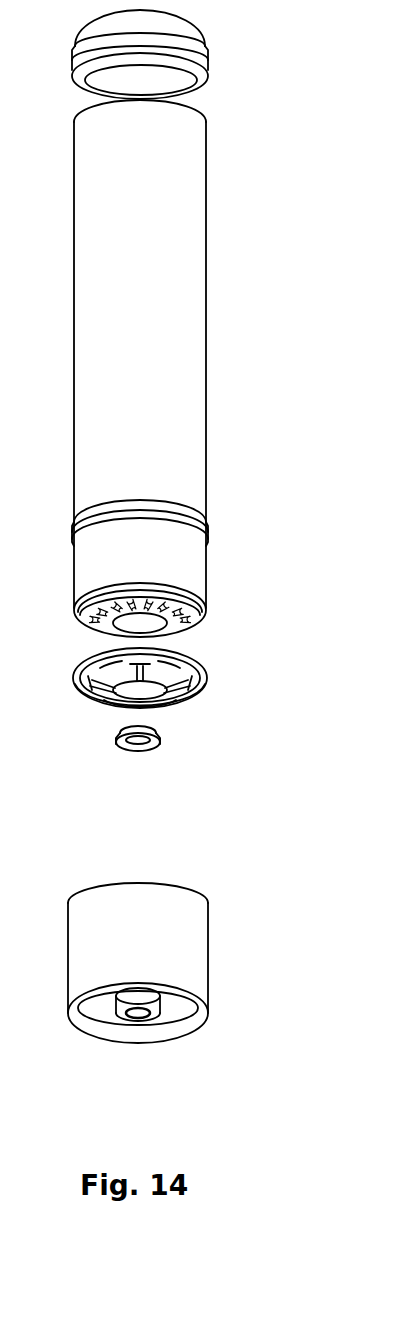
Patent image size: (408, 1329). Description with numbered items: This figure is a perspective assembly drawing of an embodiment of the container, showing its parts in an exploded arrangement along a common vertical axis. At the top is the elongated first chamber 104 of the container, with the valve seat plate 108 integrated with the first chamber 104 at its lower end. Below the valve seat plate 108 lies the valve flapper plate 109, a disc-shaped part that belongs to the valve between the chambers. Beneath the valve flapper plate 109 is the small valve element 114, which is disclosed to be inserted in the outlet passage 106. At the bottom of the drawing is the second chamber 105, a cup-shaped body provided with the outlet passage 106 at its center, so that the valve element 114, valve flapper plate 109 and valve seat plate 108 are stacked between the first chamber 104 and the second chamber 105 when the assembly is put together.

The first chamber 104 is at (145, 545).
The second chamber 105 is at (209, 922).
The outlet passage 106 is at (160, 1007).
The valve seat plate 108 is at (187, 618).
The valve flapper plate 109 is at (193, 686).
The valve element 114 is at (168, 739).